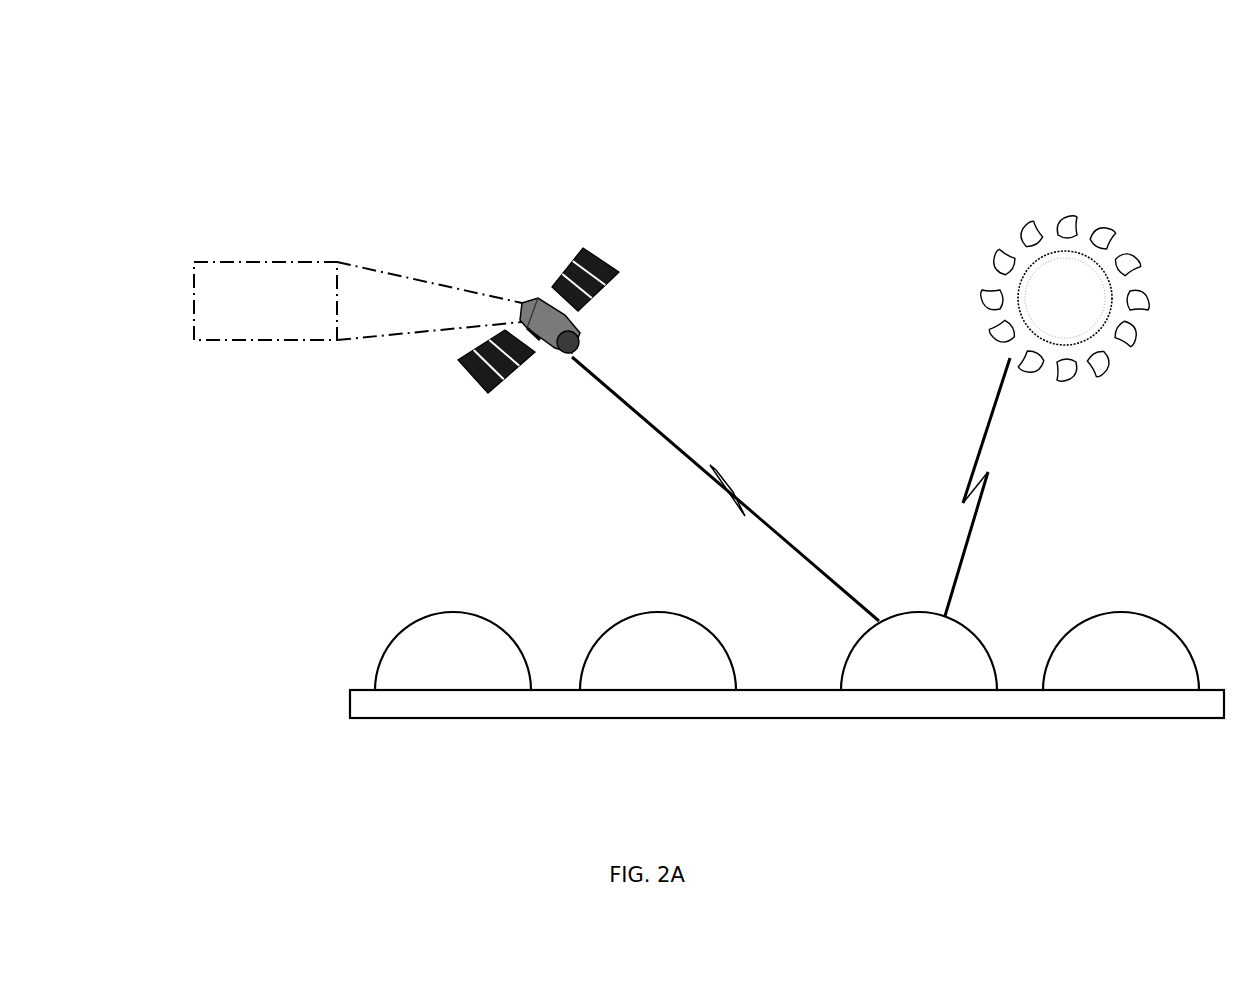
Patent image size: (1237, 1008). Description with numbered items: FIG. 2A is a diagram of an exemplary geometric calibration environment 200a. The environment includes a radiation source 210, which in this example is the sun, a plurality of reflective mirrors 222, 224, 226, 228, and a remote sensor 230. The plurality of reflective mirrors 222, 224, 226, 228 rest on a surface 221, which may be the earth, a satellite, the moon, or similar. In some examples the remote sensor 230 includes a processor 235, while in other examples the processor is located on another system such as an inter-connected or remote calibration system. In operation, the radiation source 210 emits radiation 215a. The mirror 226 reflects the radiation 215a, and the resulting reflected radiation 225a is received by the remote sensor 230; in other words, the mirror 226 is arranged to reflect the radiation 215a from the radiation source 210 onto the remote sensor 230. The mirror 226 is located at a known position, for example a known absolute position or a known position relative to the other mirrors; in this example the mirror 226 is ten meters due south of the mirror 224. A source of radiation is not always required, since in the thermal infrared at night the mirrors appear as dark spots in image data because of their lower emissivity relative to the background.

The geometric calibration environment 200a is at (709, 436).
The radiation source 210 is at (1010, 235).
The radiation 215a is at (988, 432).
The surface 221 is at (567, 720).
The reflective mirror 222 is at (435, 676).
The reflective mirror 224 is at (640, 676).
The reflective mirror 226 is at (901, 676).
The reflective mirror 228 is at (1103, 676).
The reflected radiation 225a is at (645, 425).
The remote sensor 230 is at (572, 265).
The processor 235 is at (247, 324).